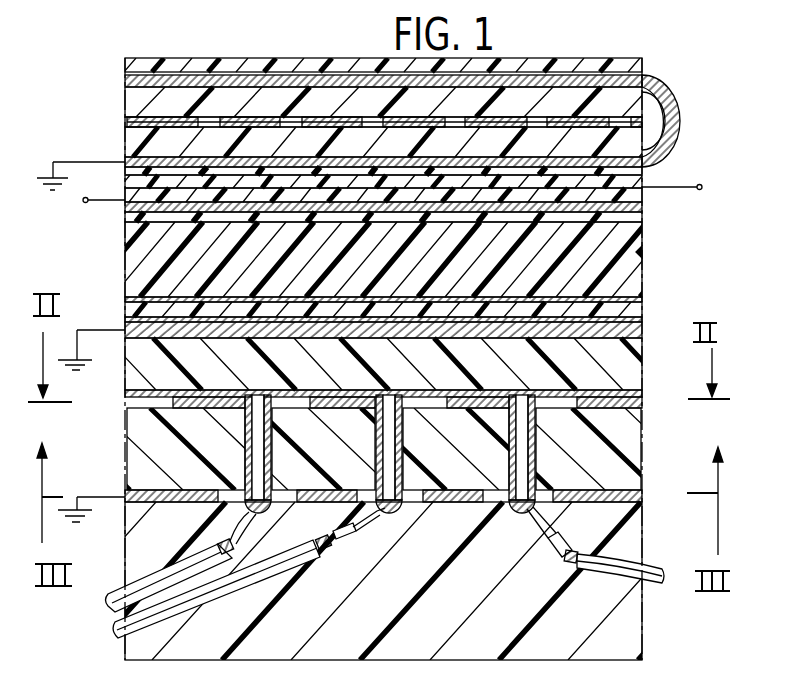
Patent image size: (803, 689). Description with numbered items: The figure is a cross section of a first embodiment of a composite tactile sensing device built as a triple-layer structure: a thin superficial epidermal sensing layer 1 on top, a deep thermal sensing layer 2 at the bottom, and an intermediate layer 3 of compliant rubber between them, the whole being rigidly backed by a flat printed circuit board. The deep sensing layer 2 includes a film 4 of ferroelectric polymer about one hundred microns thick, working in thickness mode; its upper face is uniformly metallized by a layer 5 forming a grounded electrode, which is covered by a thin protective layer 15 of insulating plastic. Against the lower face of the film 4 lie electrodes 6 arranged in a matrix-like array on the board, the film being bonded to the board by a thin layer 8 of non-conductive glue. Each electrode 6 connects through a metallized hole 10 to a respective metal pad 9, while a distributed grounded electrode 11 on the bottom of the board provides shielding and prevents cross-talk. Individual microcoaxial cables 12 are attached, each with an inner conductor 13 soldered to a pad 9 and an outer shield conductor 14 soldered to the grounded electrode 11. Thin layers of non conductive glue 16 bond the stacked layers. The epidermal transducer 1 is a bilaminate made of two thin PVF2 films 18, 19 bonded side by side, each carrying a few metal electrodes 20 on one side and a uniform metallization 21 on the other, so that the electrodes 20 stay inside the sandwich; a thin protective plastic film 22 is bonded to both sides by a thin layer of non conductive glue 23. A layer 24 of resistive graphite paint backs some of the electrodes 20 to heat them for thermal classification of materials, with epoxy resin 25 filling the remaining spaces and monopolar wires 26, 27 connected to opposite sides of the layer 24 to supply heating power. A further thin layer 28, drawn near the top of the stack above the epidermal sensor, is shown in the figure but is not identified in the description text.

The superficial sensing layer 1 is at (690, 92).
The deep sensing layer 2 is at (653, 378).
The intermediate layer 3 is at (640, 268).
The film 4 is at (640, 380).
The layer 5 is at (125, 368).
The electrodes 6 is at (125, 439).
The layer of non-conductive glue 8 is at (640, 403).
The metal pad 9 is at (278, 512).
The metallized hole 10 is at (512, 436).
The distributed grounded electrode 11 is at (160, 510).
The microcoaxial cables 12 is at (113, 624).
The inner conductor 13 is at (236, 512).
The outer shield conductor 14 is at (240, 552).
The protective layer 15 is at (640, 312).
The layers of non conductive glue 16 is at (125, 318).
The PVF2 film 18 is at (612, 100).
The PVF2 film 19 is at (618, 143).
The metal electrodes 20 is at (242, 114).
The uniform metallization 21 is at (672, 143).
The protective plastic film 22 is at (538, 67).
The layer of non conductive glue 23 is at (125, 156).
The layer of resistive paint 24 is at (640, 195).
The epoxy resin 25 is at (125, 238).
The monopolar wire 26 is at (702, 185).
The monopolar wire 27 is at (83, 202).
The layer 28 is at (277, 76).